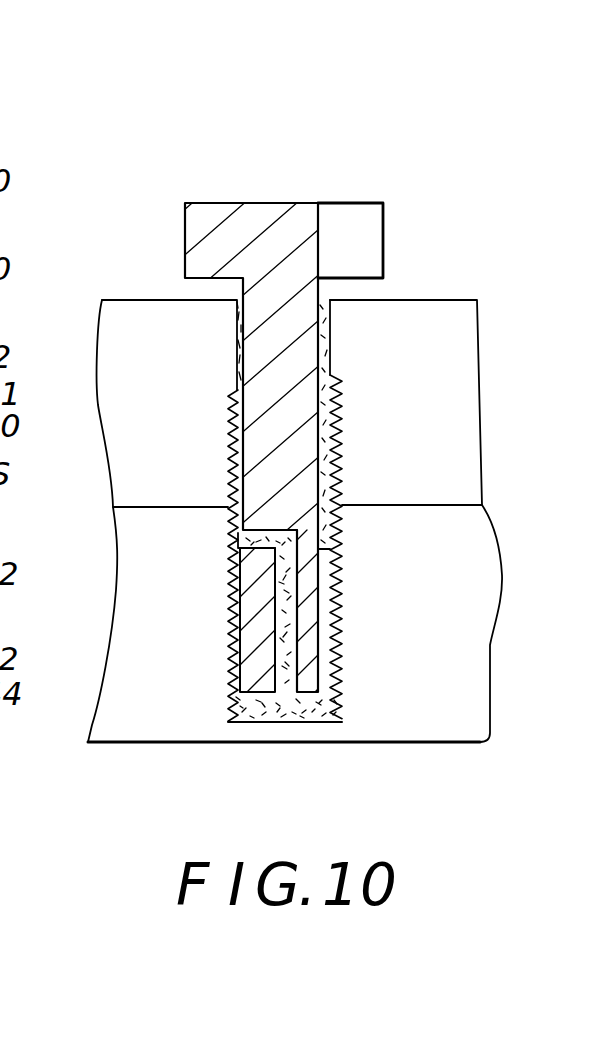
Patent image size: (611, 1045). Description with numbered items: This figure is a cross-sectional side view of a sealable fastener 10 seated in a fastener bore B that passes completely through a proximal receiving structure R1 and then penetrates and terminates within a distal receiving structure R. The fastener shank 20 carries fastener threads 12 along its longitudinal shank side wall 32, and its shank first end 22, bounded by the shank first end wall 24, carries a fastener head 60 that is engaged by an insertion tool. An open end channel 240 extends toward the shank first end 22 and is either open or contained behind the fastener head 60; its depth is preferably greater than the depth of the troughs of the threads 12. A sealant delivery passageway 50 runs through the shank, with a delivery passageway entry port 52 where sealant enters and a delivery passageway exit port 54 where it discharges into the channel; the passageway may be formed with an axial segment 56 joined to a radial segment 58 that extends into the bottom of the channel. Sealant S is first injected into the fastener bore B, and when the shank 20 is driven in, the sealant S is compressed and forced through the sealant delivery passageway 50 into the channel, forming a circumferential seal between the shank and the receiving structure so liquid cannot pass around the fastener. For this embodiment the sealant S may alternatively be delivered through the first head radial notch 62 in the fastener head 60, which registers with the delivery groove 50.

The sealable fastener 10 is at (150, 237).
The fastener threads 12 is at (236, 702).
The fastener shank 20 is at (333, 487).
The shank first end 22 is at (383, 272).
The shank first end wall 24 is at (207, 203).
The longitudinal shank side wall 32 is at (233, 402).
The sealant delivery passageway 50 is at (297, 620).
The delivery passageway entry port 52 is at (260, 203).
The delivery passageway exit port 54 is at (228, 539).
The axial segment 56 is at (240, 246).
The radial segment 58 is at (232, 588).
The fastener head 60 is at (383, 240).
The first head radial notch 62 is at (337, 220).
The open end channel 240 is at (345, 485).
The fastener bore B is at (232, 316).
The distal receiving structure R is at (123, 616).
The proximal receiving structure R1 is at (133, 407).
The sealant S is at (333, 417).